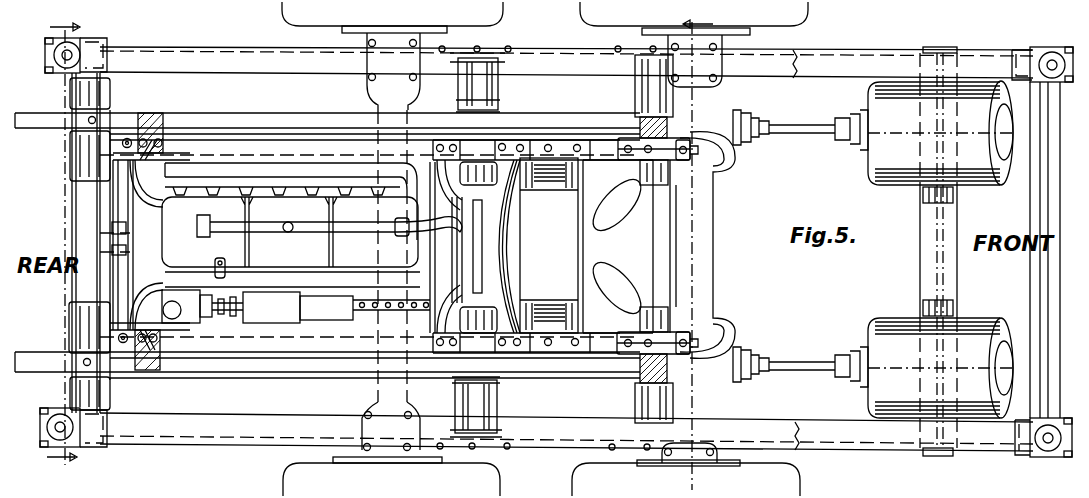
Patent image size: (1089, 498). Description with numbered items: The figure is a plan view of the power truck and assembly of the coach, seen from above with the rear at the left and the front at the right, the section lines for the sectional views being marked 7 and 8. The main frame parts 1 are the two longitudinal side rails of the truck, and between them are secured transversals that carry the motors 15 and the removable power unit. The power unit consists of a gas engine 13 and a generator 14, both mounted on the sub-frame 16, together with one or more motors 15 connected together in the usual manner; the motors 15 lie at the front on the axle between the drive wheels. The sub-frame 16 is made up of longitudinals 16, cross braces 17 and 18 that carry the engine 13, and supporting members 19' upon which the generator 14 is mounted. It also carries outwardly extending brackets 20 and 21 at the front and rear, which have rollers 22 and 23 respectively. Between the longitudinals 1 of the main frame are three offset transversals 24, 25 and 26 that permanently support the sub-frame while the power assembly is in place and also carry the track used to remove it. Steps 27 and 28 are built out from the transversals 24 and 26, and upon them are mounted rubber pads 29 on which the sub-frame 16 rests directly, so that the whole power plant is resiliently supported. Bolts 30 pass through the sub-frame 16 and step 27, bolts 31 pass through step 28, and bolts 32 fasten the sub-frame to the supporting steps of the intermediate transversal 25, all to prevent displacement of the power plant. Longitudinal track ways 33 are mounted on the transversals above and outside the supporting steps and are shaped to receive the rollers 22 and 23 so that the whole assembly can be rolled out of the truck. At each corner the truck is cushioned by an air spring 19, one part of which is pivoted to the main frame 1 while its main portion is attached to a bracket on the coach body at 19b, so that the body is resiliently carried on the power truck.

The main frame parts 1 is at (797, 50).
The section line 7- 7 is at (63, 247).
The door 8 is at (698, 245).
The gas engine 13 is at (312, 243).
The generator 14 is at (549, 245).
The motors 15 is at (893, 143).
The sub-frame 16 is at (345, 145).
The cross brace 17 is at (117, 191).
The cross brace 18 is at (433, 158).
The pneumatic device 19 is at (537, 258).
The bracket attachment 19b is at (102, 44).
The supporting members 19' is at (549, 243).
The outwardly extending bracket 20 is at (675, 134).
The outwardly extending bracket 21 is at (152, 140).
The roller 22 is at (640, 127).
The roller 23 is at (143, 113).
The offset transversal 24 is at (650, 293).
The intermediate transversal 25 is at (477, 300).
The offset transversal 26 is at (85, 218).
The step 27 is at (690, 173).
The step 28 is at (137, 134).
The rubber pads 29 is at (693, 140).
The bolts 30 is at (692, 153).
The bolts 31 is at (120, 143).
The bolts 32 is at (500, 146).
The longitudinal track ways 33 is at (257, 121).